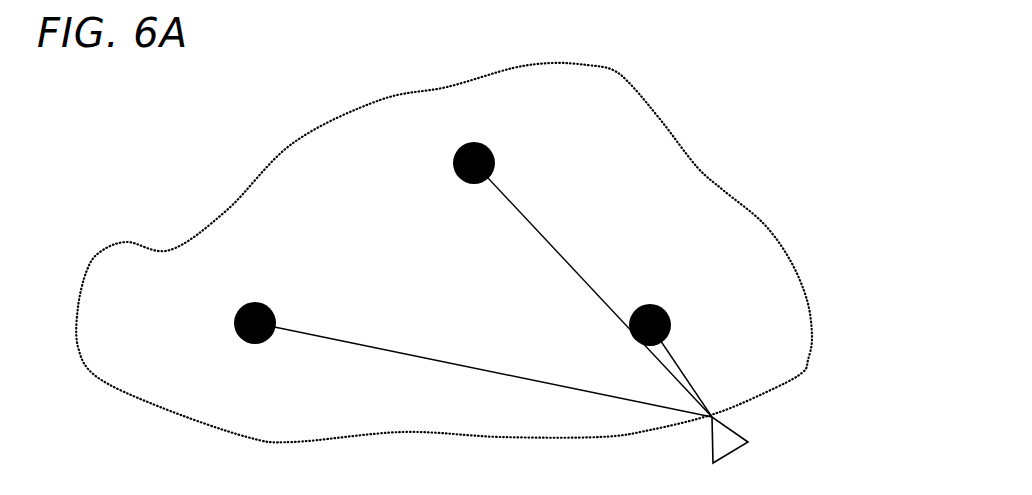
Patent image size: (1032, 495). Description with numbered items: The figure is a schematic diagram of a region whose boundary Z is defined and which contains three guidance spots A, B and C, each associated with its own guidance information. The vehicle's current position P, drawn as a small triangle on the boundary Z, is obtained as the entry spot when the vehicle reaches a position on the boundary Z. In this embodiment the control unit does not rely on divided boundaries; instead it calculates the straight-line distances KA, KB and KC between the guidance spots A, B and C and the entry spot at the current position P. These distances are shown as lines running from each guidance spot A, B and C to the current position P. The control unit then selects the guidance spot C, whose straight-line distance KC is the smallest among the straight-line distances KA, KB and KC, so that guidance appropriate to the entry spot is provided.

The guidance spot A is at (255, 340).
The guidance spot B is at (488, 157).
The guidance spot C is at (668, 325).
The current position P is at (748, 442).
The boundary Z is at (812, 333).
The straight-line distance KA is at (483, 370).
The straight-line distance KB is at (593, 290).
The straight-line distance KC is at (682, 371).